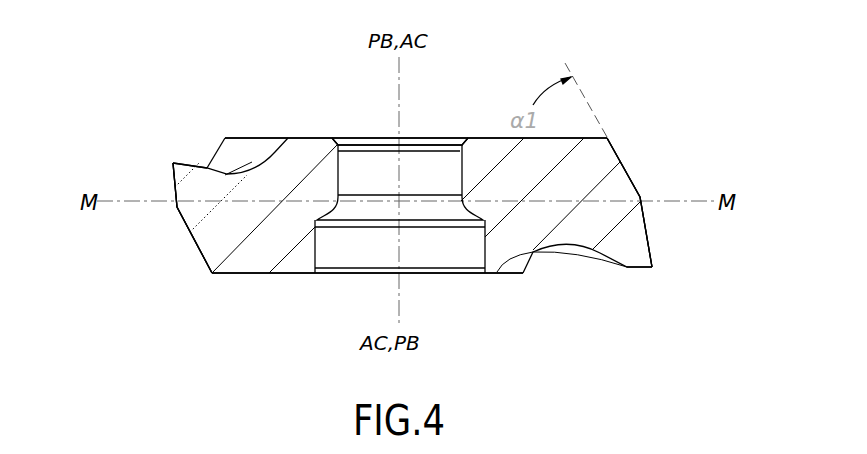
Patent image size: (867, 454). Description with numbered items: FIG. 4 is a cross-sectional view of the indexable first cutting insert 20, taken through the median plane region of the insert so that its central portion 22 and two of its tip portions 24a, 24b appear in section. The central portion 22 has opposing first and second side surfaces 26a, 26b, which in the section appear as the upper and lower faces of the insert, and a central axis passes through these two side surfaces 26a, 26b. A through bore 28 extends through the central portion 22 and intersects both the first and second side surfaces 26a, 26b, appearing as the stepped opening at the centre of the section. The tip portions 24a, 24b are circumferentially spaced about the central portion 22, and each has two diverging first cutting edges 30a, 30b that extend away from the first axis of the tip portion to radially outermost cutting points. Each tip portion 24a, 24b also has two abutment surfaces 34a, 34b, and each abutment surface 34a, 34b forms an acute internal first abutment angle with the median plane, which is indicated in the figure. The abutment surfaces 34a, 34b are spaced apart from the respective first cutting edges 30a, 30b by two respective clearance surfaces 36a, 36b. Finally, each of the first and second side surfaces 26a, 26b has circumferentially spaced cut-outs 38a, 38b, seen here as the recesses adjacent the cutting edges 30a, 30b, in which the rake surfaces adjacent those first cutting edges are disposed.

The first cutting insert 20 is at (473, 283).
The central portion 22 is at (321, 137).
The tip portion 24a is at (177, 207).
The tip portion 24b is at (640, 195).
The first side surface 26a is at (490, 137).
The second side surface 26b is at (287, 276).
The through bore 28 is at (350, 243).
The first cutting edge 30a is at (173, 163).
The first cutting edge 30b is at (652, 267).
The abutment surface 34a is at (193, 238).
The abutment surface 34b is at (625, 165).
The clearance surface 36a is at (174, 185).
The clearance surface 36b is at (648, 233).
The cut-out 38a is at (245, 172).
The cut-out 38b is at (552, 252).